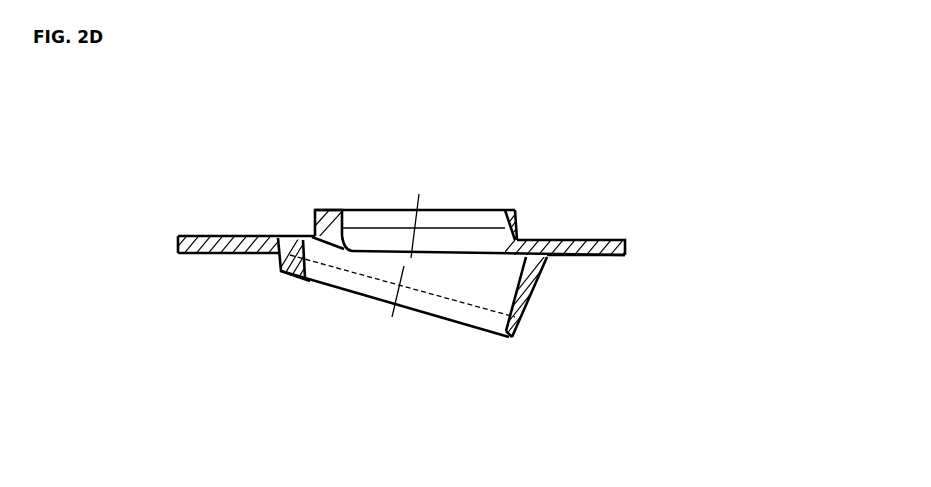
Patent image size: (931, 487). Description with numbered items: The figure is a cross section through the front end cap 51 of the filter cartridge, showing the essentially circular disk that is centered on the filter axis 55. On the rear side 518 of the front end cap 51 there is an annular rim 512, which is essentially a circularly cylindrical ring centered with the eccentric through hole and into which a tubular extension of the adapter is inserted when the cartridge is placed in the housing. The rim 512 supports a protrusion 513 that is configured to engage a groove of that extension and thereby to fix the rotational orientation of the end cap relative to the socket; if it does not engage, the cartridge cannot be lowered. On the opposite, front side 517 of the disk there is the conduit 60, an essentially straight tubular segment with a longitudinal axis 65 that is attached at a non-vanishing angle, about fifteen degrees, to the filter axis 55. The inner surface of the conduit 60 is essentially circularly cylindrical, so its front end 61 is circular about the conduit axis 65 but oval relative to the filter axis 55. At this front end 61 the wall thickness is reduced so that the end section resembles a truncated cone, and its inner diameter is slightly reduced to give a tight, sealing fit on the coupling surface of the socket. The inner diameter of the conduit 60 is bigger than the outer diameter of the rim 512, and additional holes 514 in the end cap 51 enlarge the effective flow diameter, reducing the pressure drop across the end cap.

The front end cap 51 is at (177, 245).
The conduit 60 is at (276, 262).
The additional holes 514 is at (318, 240).
The front end of the conduit 61 is at (486, 340).
The protrusion 513 is at (343, 228).
The filter axis 55 is at (413, 198).
The longitudinal axis of the conduit 65 is at (419, 200).
The annular rim 512 is at (512, 214).
The rear side of the front end cap 518 is at (608, 240).
The front side of the disk 517 is at (607, 258).